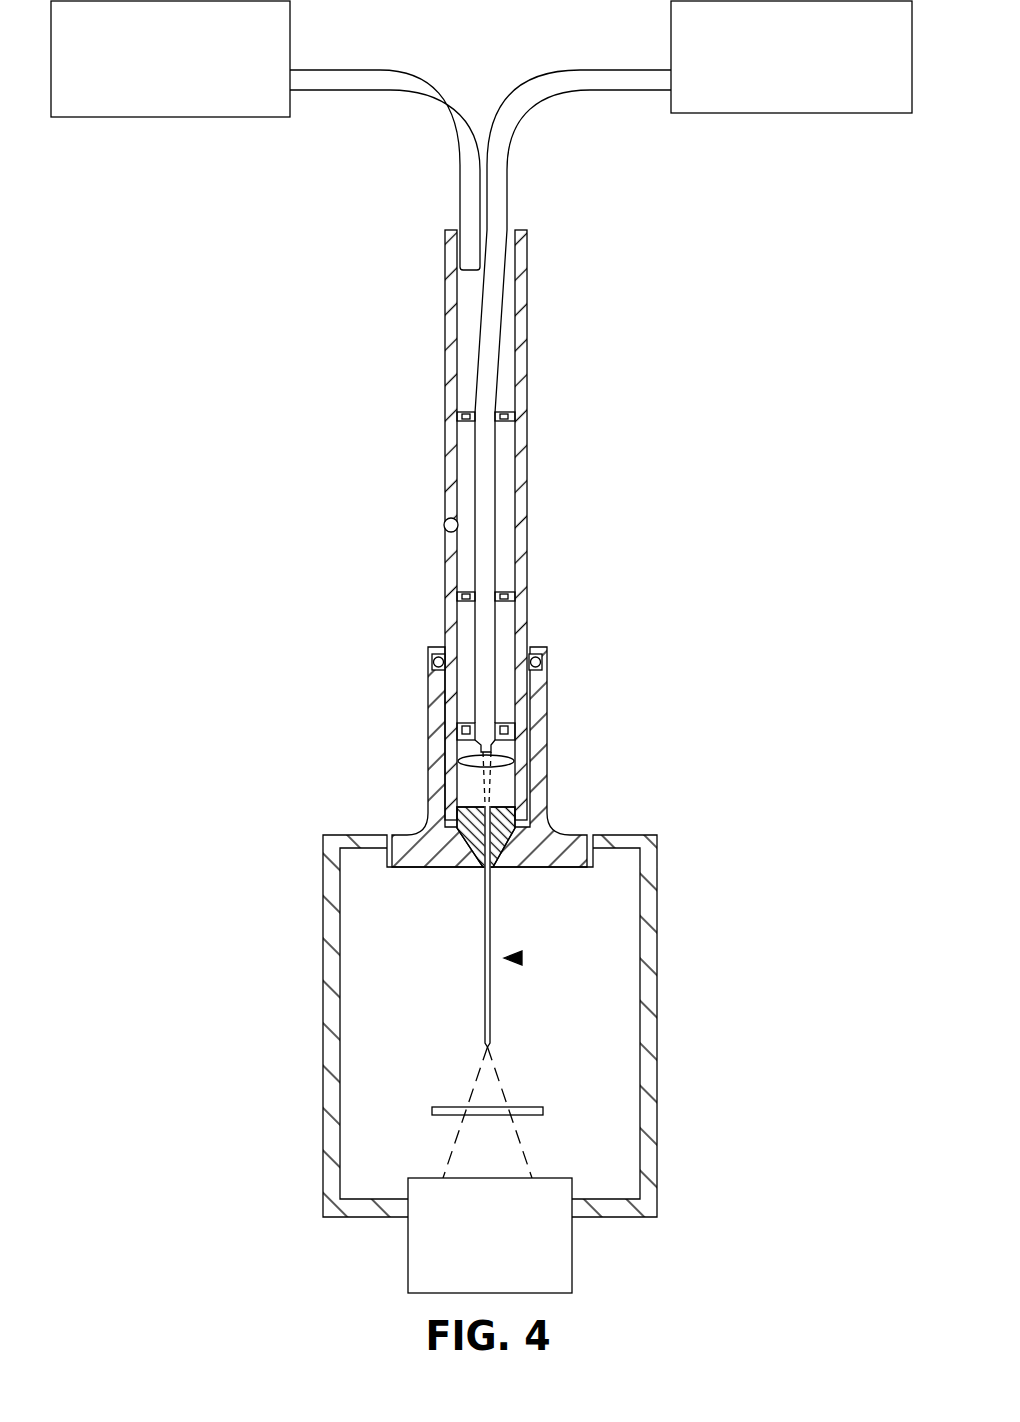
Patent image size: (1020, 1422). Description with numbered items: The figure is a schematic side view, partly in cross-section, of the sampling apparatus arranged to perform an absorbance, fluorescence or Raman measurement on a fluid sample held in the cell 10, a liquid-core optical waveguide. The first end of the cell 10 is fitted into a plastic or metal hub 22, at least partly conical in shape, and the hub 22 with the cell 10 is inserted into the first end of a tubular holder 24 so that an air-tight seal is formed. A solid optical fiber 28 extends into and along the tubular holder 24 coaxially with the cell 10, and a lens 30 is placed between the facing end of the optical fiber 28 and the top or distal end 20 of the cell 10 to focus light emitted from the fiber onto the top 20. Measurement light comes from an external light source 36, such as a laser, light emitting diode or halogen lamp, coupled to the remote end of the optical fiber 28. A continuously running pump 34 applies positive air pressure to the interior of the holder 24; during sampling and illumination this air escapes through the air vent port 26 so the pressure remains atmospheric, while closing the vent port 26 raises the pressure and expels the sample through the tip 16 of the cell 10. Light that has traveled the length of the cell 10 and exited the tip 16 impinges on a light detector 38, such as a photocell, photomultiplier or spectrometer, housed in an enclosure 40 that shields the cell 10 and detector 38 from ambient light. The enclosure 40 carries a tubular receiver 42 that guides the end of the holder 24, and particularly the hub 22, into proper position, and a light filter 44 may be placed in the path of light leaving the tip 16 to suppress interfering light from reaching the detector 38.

The cell 10 is at (520, 958).
The tip 16 is at (492, 1048).
The distal end 20 is at (502, 800).
The hub 22 is at (512, 852).
The tubular holder 24 is at (527, 553).
The air vent port 26 is at (445, 525).
The optical fiber 28 is at (522, 118).
The lens 30 is at (503, 766).
The pump 34 is at (153, 90).
The light source 36 is at (770, 88).
The light detector 38 is at (475, 1250).
The enclosure 40 is at (657, 1078).
The tubular receiver 42 is at (427, 760).
The light filter 44 is at (438, 1107).